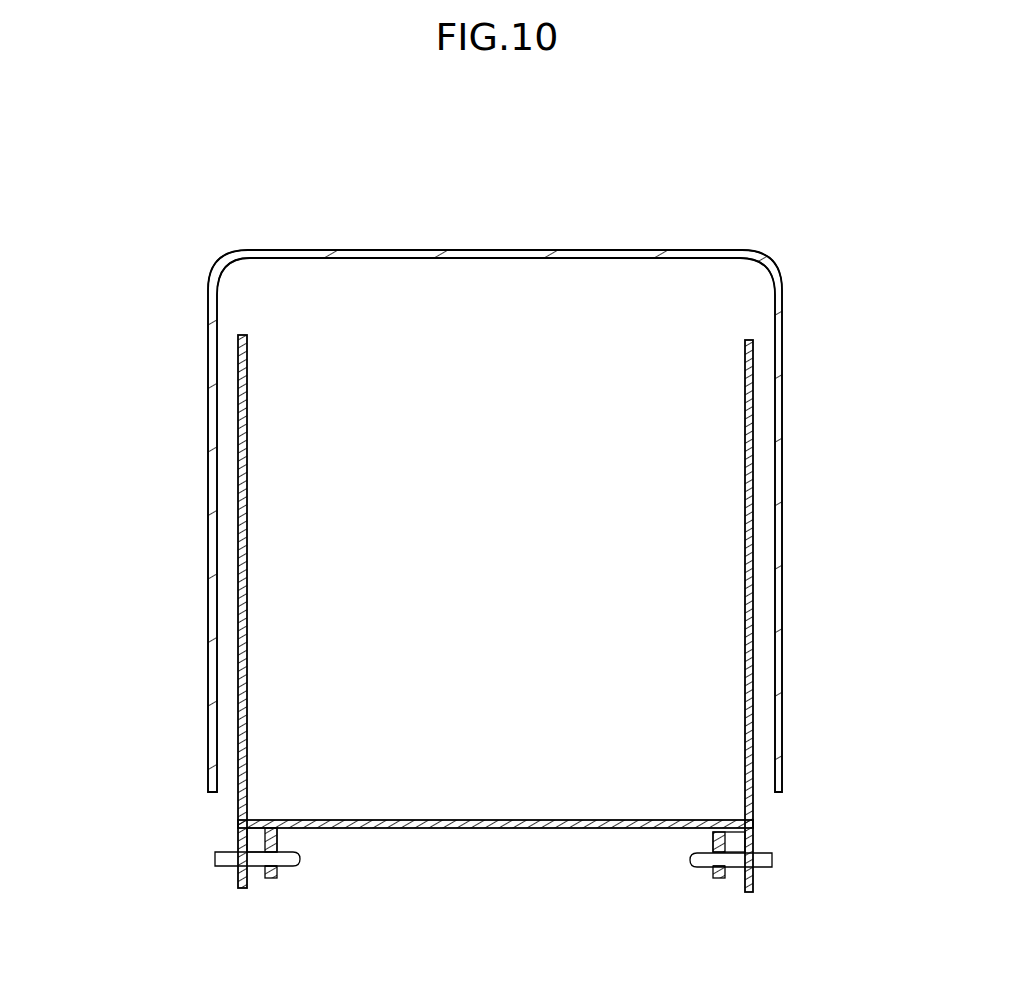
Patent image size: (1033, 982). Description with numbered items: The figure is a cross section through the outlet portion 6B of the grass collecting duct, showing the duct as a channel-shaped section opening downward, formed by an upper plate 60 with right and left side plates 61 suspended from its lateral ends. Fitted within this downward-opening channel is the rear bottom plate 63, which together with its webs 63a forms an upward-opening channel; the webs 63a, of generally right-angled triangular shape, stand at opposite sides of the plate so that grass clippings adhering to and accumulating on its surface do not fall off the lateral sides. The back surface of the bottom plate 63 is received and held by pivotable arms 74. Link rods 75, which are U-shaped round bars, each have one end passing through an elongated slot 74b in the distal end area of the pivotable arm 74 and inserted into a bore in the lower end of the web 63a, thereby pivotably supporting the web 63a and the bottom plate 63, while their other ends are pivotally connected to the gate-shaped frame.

The upper plate 60 is at (466, 250).
The side plates 61 is at (208, 425).
The rear bottom plate 63 is at (490, 820).
The webs 63a is at (247, 555).
The outlet portion 6B is at (553, 524).
The pivotable arms 74 is at (280, 840).
The slot 74b is at (256, 875).
The link rods 75 is at (215, 853).